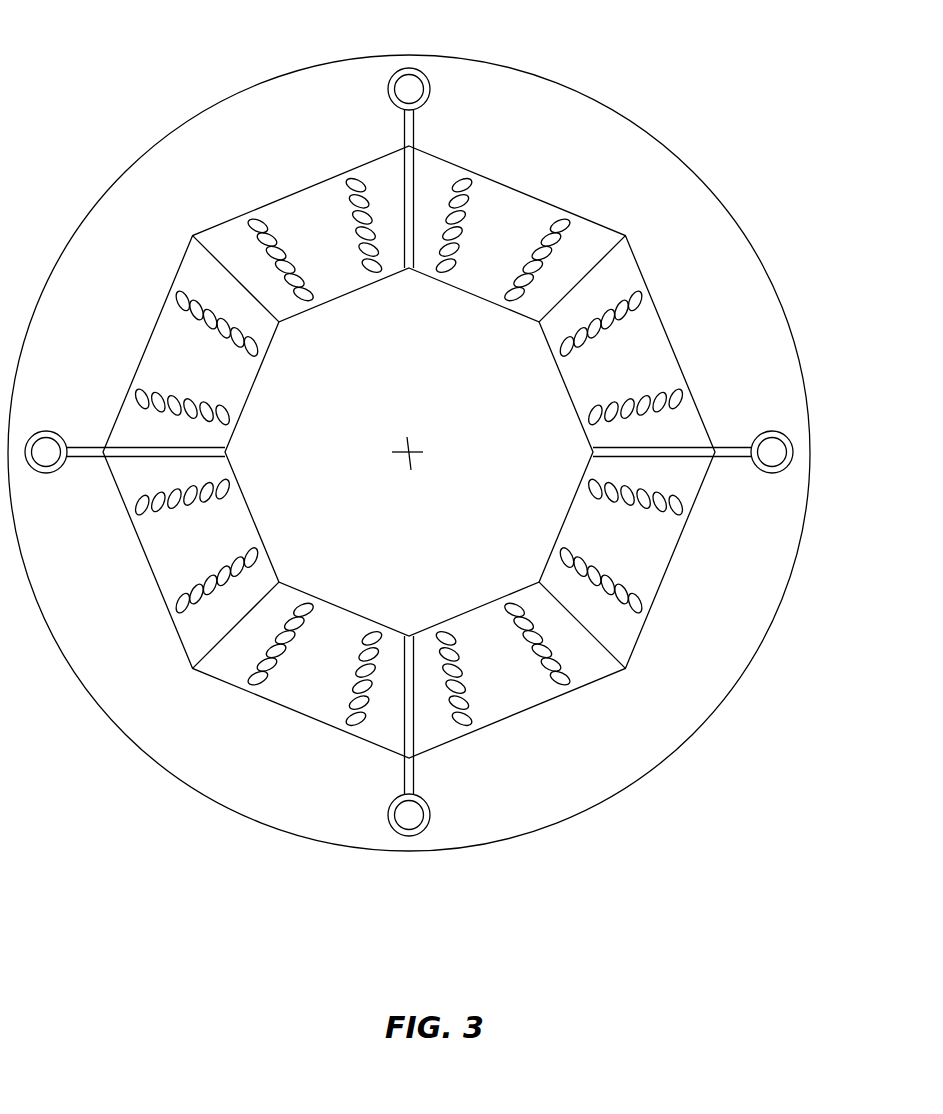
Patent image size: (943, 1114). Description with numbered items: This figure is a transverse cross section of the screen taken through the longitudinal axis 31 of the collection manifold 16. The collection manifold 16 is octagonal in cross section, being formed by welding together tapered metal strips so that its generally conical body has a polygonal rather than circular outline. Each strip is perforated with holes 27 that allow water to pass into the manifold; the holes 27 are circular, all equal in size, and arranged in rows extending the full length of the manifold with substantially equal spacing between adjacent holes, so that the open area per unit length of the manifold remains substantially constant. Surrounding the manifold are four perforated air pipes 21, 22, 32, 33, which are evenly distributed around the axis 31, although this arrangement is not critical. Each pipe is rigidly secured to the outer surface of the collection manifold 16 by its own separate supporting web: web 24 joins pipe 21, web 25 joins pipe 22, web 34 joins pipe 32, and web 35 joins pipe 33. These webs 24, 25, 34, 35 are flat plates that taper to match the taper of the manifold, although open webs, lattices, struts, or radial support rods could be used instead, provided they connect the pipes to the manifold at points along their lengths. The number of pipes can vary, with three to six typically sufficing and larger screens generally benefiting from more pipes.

The collection manifold 16 is at (522, 720).
The perforated air pipe 21 is at (420, 72).
The perforated air pipe 22 is at (423, 833).
The web 24 is at (415, 132).
The web 25 is at (415, 782).
The holes 27 is at (613, 292).
The longitudinal axis 31 is at (412, 451).
The perforated air pipe 32 is at (43, 474).
The perforated air pipe 33 is at (775, 473).
The supporting web 34 is at (732, 446).
The supporting web 35 is at (93, 447).